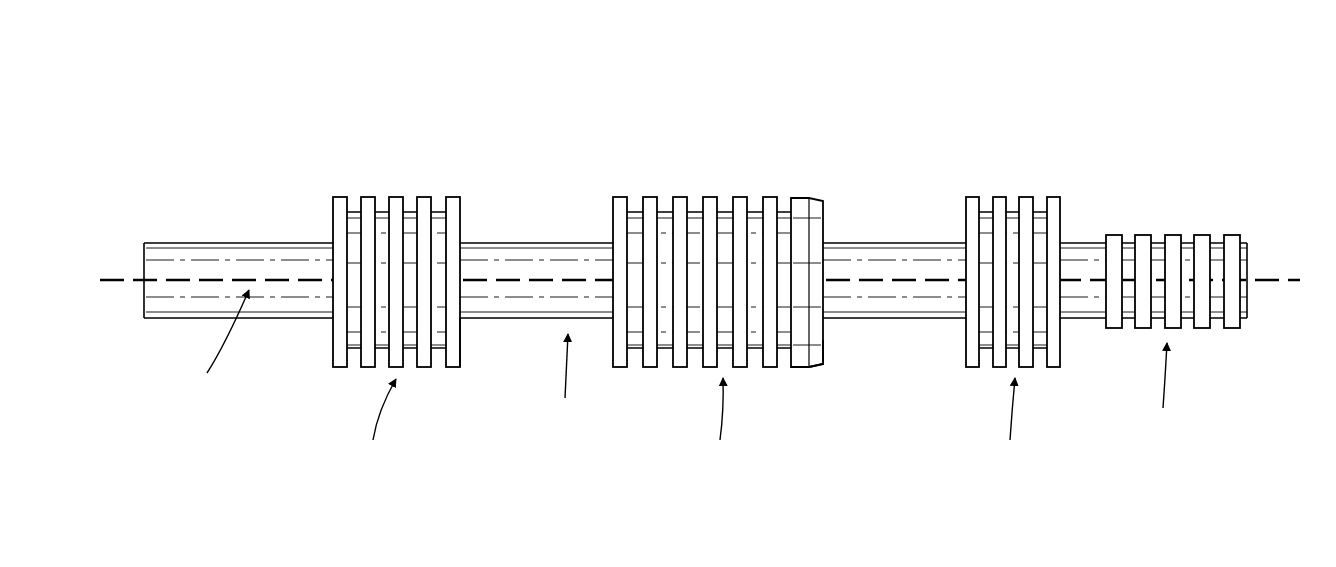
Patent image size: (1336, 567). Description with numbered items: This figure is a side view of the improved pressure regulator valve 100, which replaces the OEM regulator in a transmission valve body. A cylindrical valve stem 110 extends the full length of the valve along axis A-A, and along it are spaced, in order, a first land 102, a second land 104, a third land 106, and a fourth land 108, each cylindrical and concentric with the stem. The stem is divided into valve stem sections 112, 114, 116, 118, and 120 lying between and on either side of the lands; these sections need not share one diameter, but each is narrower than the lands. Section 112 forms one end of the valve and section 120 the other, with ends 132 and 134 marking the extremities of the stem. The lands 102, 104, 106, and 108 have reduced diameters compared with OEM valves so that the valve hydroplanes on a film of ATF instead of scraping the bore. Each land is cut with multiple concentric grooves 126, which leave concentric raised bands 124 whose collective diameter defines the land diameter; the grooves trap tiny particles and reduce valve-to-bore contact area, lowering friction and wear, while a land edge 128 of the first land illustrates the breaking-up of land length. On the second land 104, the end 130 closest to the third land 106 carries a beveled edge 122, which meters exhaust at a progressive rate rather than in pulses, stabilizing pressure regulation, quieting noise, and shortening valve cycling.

The pressure regulator valve 100 is at (912, 116).
The first land 102 is at (394, 181).
The second land 104 is at (709, 179).
The third land 106 is at (1024, 165).
The fourth land 108 is at (1176, 218).
The valve stem 110 is at (523, 231).
The valve stem section 112 is at (168, 243).
The valve stem section 114 is at (580, 243).
The valve stem section 116 is at (890, 243).
The valve stem section 118 is at (1085, 243).
The valve stem section 120 is at (1247, 243).
The beveled edge 122 is at (812, 200).
The concentric raised band 124 is at (340, 197).
The concentric groove 126 is at (443, 212).
The fin section edge 128 is at (461, 349).
The end of the second land 130 is at (823, 352).
The first end 132 is at (131, 262).
The second end 134 is at (1265, 265).